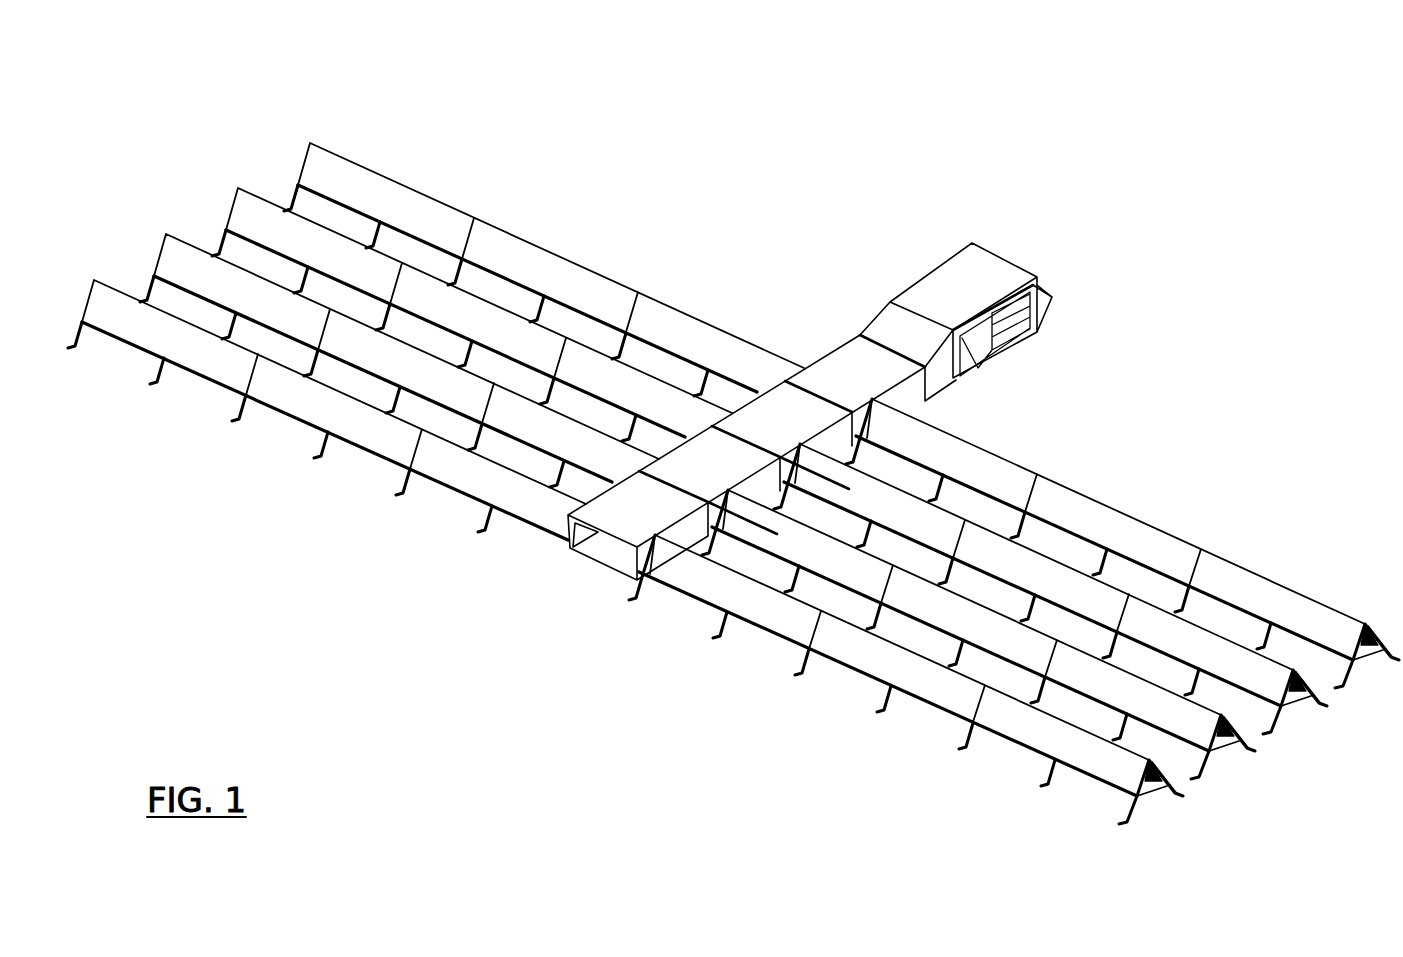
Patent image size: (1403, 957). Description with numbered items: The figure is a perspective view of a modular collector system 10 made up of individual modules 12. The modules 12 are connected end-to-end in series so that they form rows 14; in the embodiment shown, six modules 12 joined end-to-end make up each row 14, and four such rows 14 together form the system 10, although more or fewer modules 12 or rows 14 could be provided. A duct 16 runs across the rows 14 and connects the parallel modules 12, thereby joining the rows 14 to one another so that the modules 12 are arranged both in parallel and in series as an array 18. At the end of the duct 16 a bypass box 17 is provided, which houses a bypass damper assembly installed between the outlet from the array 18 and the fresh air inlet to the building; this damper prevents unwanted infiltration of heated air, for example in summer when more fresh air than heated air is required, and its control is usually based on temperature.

The system 10 is at (733, 451).
The module 12 is at (605, 272).
The row 14 is at (293, 156).
The duct 16 is at (781, 420).
The bypass box 17 is at (966, 287).
The array 18 is at (1042, 375).